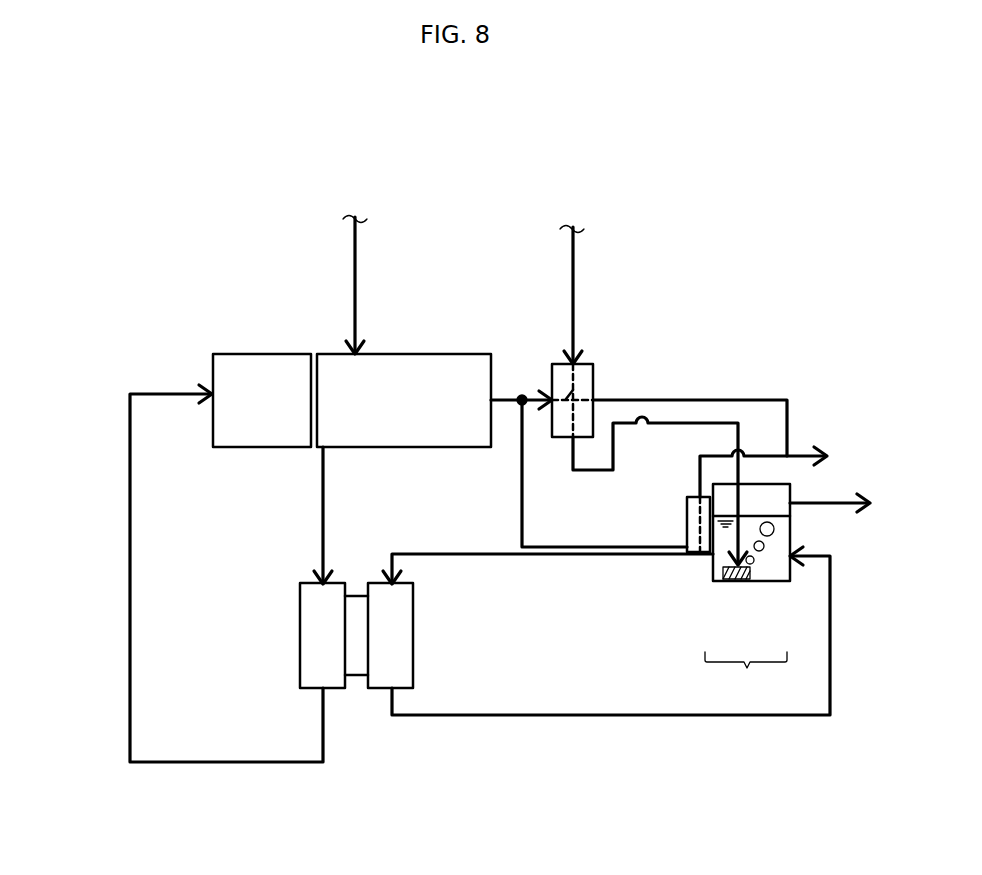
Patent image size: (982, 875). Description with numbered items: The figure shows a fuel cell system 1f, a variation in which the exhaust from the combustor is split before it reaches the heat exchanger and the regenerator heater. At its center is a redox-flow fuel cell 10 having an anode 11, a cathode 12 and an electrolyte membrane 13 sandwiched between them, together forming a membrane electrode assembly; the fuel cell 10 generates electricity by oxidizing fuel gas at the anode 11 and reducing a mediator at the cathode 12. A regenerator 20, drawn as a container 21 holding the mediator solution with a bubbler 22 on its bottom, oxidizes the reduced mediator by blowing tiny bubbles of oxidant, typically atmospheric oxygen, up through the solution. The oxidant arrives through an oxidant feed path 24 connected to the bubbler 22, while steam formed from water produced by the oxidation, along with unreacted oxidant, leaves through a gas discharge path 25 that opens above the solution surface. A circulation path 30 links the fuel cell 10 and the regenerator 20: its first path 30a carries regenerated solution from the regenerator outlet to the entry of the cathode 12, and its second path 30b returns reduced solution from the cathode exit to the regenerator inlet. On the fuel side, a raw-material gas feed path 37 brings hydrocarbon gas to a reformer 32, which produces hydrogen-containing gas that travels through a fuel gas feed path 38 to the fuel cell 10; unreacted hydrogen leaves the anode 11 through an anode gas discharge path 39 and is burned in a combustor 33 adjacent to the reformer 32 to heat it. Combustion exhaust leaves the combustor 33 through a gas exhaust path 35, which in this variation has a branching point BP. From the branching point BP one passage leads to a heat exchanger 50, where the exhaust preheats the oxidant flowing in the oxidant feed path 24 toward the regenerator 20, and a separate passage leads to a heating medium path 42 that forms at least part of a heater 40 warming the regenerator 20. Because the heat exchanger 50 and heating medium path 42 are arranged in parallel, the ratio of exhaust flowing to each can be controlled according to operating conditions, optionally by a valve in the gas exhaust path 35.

The fuel cell system 1f is at (744, 181).
The fuel cell 10 is at (353, 664).
The anode 11 is at (317, 658).
The cathode 12 is at (400, 630).
The electrolyte membrane 13 is at (355, 678).
The regenerator 20 is at (746, 677).
The container 21 is at (772, 582).
The bubbler 22 is at (737, 582).
The oxidant feed path 24 is at (582, 283).
The gas discharge path 25 is at (837, 501).
The circulation path 30 is at (485, 551).
The first path 30a is at (430, 553).
The second path 30b is at (557, 715).
The reformer 32 is at (407, 354).
The combustor 33 is at (258, 354).
The gas exhaust path 35 is at (505, 391).
The branching point BP is at (524, 394).
The raw-material gas feed path 37 is at (355, 247).
The fuel gas feed path 38 is at (323, 507).
The anode gas discharge path 39 is at (130, 573).
The heater 40 is at (687, 497).
The heating medium path 42 is at (693, 554).
The heat exchanger 50 is at (593, 378).